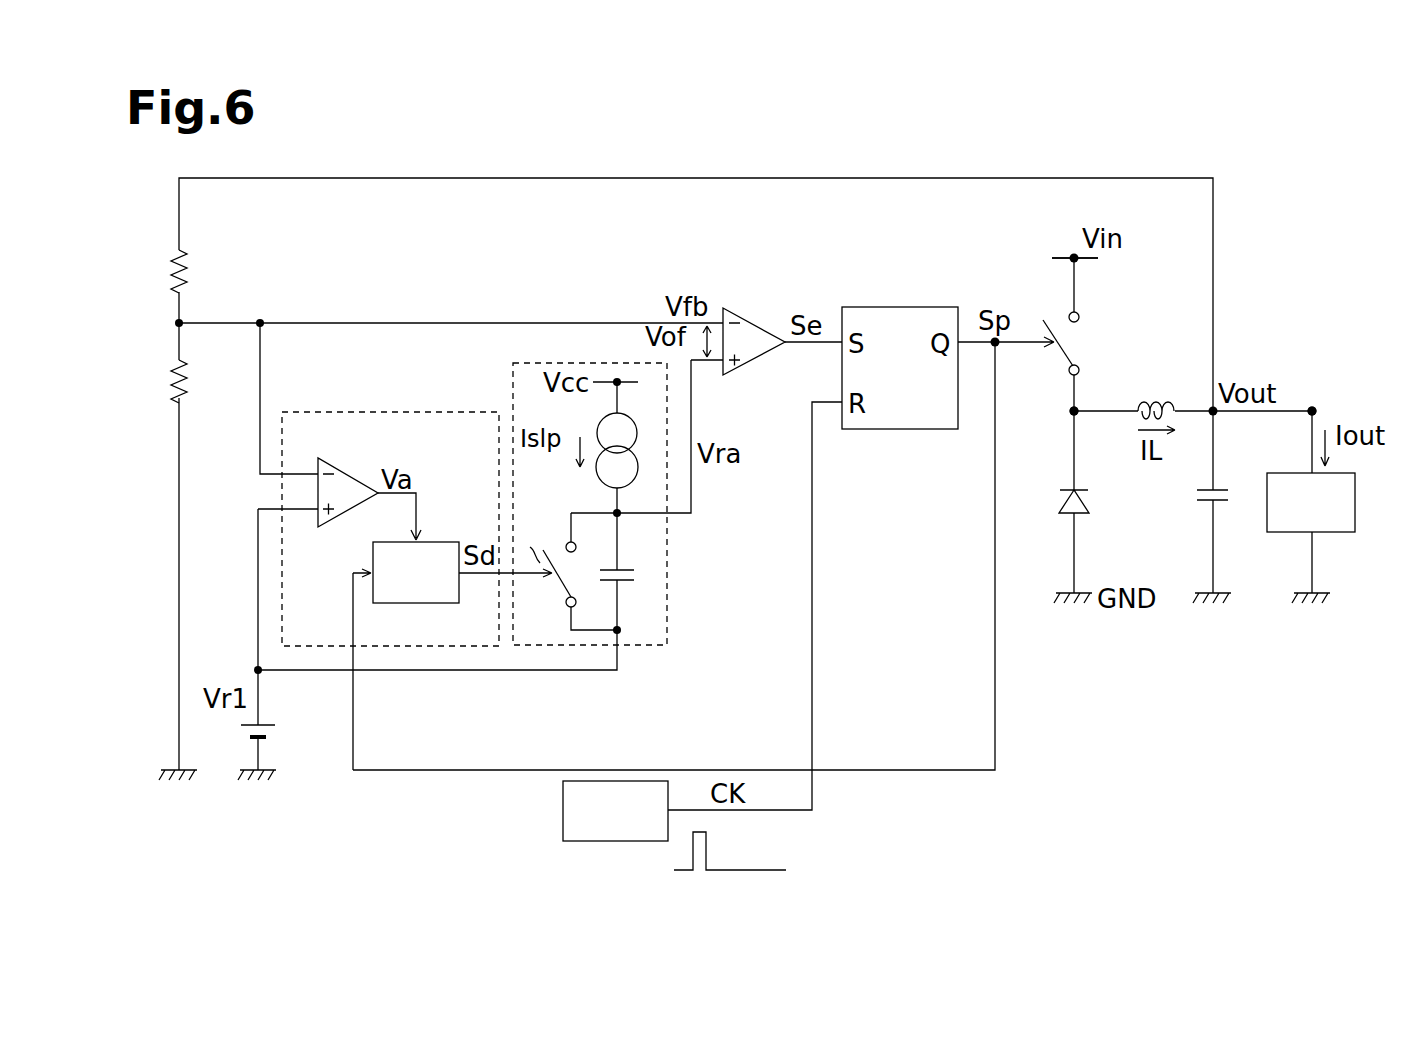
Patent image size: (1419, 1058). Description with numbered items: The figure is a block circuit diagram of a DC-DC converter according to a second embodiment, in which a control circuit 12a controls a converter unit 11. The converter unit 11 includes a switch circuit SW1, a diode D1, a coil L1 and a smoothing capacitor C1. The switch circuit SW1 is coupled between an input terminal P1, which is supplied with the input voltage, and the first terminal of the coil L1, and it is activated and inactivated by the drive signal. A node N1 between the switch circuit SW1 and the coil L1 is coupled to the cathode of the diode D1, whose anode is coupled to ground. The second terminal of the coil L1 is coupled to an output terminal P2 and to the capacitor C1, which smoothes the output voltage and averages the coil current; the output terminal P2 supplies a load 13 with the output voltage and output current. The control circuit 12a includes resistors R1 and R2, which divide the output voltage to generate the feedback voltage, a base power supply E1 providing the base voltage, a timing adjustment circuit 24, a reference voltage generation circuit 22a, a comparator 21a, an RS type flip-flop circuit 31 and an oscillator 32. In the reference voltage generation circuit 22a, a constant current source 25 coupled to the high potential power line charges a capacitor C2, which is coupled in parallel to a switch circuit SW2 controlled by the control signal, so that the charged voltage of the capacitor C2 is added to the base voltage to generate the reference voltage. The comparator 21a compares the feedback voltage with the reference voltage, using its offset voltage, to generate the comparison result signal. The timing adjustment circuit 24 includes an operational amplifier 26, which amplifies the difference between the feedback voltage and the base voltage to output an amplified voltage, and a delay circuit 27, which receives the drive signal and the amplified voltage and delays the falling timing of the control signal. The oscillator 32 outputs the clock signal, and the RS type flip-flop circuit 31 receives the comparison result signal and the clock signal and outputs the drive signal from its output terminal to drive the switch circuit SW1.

The resistor R1 is at (188, 276).
The resistor R2 is at (188, 384).
The timing adjustment circuit 24 is at (390, 412).
The operational amplifier 26 is at (359, 443).
The delay circuit 27 is at (432, 542).
The reference voltage generation circuit 22a is at (667, 580).
The constant current source 25 is at (600, 420).
The capacitor C2 is at (624, 570).
The switch circuit SW2 is at (566, 561).
The comparator 21a is at (776, 301).
The RS type flip-flop circuit 31 is at (888, 307).
The control circuit 12a is at (919, 236).
The converter unit 11 is at (1007, 233).
The input terminal P1 is at (1074, 258).
The switch circuit SW1 is at (1070, 348).
The node N1 is at (1073, 411).
The coil L1 is at (1160, 396).
The output terminal P2 is at (1311, 407).
The load 13 is at (1355, 500).
The diode D1 is at (1084, 505).
The smoothing capacitor C1 is at (1204, 503).
The base power supply E1 is at (256, 742).
The oscillator 32 is at (563, 808).